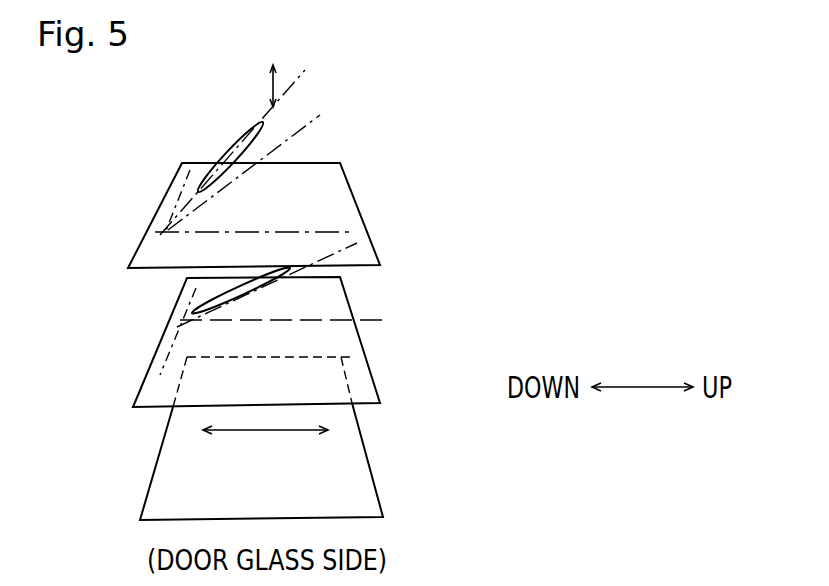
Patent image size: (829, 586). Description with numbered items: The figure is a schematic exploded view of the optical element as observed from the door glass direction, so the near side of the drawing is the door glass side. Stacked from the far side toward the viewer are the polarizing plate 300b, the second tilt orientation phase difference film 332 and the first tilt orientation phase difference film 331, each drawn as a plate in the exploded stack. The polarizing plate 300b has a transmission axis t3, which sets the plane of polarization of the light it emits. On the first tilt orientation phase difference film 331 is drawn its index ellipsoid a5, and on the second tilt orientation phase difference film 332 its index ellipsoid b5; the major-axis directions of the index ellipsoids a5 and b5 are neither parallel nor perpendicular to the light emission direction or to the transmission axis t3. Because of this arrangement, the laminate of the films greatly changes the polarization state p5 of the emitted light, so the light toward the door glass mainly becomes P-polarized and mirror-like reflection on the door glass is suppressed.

The first tilt orientation phase difference film 331 is at (340, 192).
The second tilt orientation phase difference film 332 is at (352, 350).
The polarizing plate 300b is at (358, 482).
The index ellipsoid a5 is at (223, 158).
The index ellipsoid b5 is at (246, 290).
The polarization state p5 is at (270, 86).
The transmission axis t3 is at (267, 431).